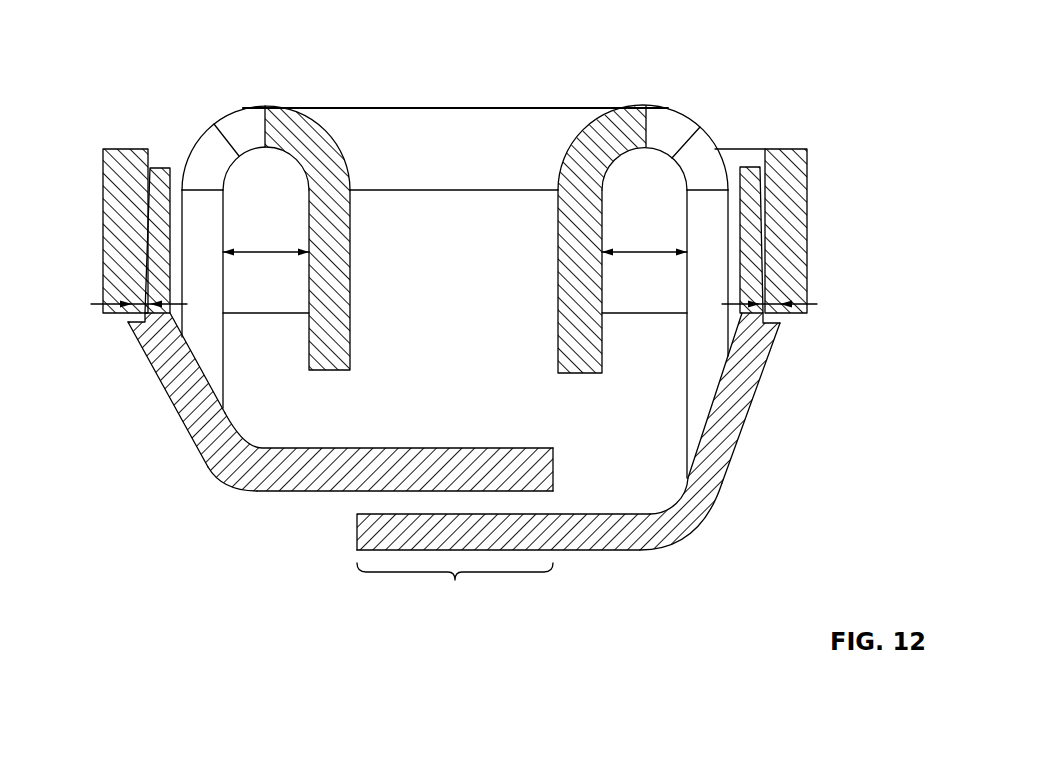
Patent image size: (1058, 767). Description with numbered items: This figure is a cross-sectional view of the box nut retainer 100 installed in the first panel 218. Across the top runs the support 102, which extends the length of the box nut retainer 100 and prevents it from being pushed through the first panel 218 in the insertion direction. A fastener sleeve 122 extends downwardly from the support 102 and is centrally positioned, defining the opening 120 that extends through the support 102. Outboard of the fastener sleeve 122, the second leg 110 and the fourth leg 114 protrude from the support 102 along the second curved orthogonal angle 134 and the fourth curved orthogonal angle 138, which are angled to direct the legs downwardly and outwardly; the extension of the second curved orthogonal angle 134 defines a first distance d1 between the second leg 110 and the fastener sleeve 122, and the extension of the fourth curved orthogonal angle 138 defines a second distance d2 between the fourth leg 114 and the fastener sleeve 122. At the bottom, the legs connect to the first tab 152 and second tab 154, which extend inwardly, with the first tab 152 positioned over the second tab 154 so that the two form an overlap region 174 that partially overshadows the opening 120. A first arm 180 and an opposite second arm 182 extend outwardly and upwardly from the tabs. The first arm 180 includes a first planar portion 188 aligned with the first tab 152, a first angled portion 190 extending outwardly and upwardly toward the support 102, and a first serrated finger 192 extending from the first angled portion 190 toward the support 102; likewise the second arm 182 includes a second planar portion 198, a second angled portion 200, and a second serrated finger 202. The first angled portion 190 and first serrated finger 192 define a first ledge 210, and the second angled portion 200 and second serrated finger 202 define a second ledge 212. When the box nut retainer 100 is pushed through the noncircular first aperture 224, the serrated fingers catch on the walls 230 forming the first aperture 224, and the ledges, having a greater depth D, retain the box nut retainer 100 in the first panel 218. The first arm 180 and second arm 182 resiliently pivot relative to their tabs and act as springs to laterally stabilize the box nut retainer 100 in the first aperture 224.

The box nut retainer 100 is at (242, 107).
The support 102 is at (415, 122).
The second leg 110 is at (213, 357).
The fourth leg 114 is at (703, 360).
The opening 120 is at (449, 220).
The fastener sleeve 122 is at (582, 353).
The second curved orthogonal angle 134 is at (205, 145).
The fourth curved orthogonal angle 138 is at (673, 135).
The first tab 152 is at (297, 470).
The second tab 154 is at (583, 535).
The overlap region 174 is at (455, 588).
The first arm 180 is at (158, 395).
The second arm 182 is at (767, 388).
The first planar portion 188 is at (273, 480).
The first angled portion 190 is at (185, 412).
The first serrated finger 192 is at (148, 217).
The second planar portion 198 is at (635, 542).
The second angled portion 200 is at (743, 397).
The second serrated finger 202 is at (748, 247).
The first ledge 210 is at (133, 327).
The second ledge 212 is at (772, 333).
The first panel 218 is at (112, 165).
The first aperture 224 is at (274, 180).
The walls 230 is at (152, 155).
The depth D is at (137, 300).
The first distance d1 is at (266, 241).
The second distance d2 is at (644, 241).